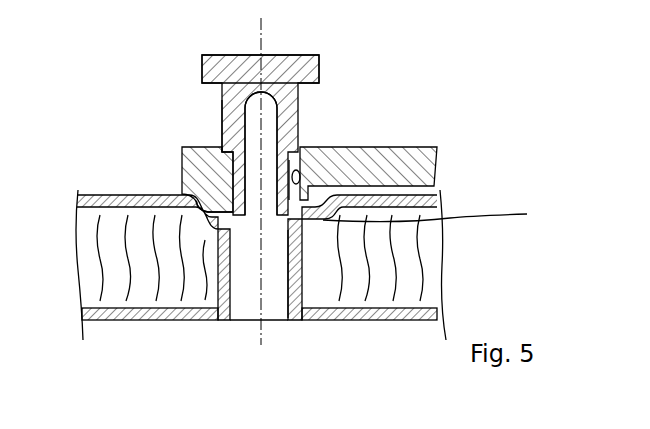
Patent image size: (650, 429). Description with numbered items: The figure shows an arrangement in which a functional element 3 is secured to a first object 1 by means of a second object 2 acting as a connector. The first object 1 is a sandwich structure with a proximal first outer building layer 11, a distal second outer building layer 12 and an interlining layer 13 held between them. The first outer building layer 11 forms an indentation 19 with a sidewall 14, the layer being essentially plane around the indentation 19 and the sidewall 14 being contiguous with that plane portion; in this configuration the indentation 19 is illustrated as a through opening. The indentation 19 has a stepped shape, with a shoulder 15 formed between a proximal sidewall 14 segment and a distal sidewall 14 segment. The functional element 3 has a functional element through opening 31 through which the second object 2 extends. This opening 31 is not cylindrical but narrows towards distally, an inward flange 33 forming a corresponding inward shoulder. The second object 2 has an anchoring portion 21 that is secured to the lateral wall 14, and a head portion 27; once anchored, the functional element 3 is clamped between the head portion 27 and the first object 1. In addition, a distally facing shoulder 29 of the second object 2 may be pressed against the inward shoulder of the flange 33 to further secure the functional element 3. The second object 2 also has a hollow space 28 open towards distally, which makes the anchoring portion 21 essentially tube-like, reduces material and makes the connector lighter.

The first object 1 is at (488, 278).
The second object 2 is at (232, 100).
The functional element 3 is at (373, 161).
The first outer building layer 11 is at (430, 202).
The second outer building layer 12 is at (430, 317).
The interlining layer 13 is at (433, 257).
The sidewall 14 is at (293, 254).
The shoulder 15 is at (441, 215).
The indentation 19 is at (246, 285).
The anchoring portion 21 is at (201, 205).
The head portion 27 is at (213, 63).
The hollow space 28 is at (267, 133).
The distally facing shoulder 29 is at (224, 131).
The functional element through opening 31 is at (294, 172).
The inward flange 33 is at (289, 183).